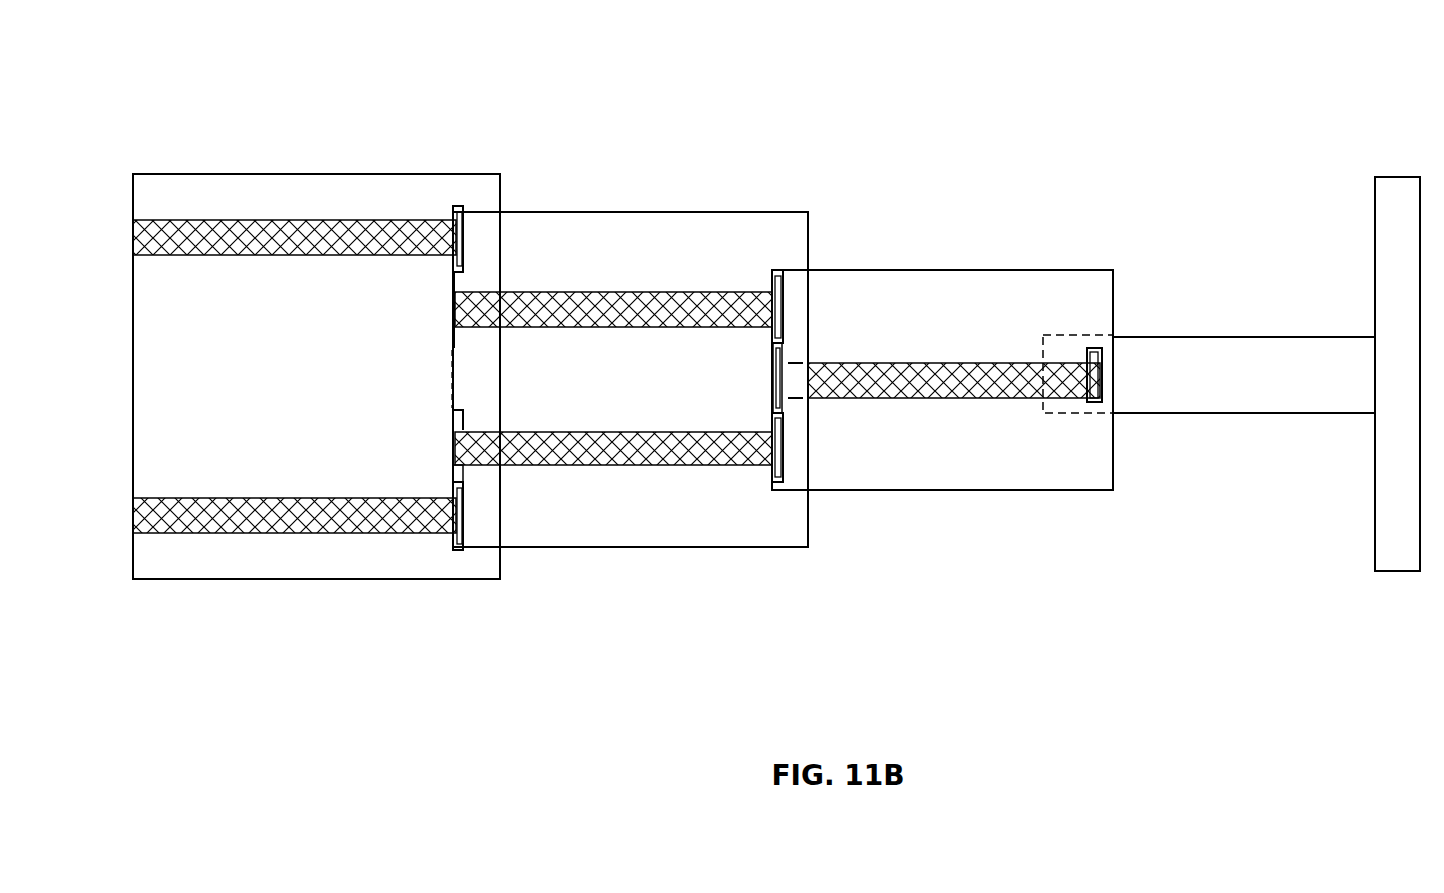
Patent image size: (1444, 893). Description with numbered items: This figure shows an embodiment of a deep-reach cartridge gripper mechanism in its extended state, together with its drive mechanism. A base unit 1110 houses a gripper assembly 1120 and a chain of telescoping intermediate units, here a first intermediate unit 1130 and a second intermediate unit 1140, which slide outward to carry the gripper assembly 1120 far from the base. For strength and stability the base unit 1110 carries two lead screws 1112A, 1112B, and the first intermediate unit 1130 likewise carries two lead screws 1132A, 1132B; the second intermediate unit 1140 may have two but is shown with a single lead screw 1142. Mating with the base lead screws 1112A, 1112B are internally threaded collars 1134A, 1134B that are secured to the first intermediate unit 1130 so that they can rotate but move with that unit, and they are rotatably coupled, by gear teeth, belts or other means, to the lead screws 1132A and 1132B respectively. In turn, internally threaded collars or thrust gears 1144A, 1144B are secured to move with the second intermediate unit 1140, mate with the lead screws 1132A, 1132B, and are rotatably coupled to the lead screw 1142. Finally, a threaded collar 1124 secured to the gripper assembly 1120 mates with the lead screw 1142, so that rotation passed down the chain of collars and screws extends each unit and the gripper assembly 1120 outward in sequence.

The base unit 1110 is at (227, 173).
The lead screw 1112A is at (302, 227).
The lead screw 1112B is at (277, 515).
The first intermediate unit 1130 is at (638, 217).
The lead screw 1132A is at (678, 293).
The lead screw 1132B is at (623, 465).
The internally threaded collar 1134A is at (468, 222).
The internally threaded collar 1134B is at (447, 535).
The second intermediate unit 1140 is at (1037, 272).
The lead screw 1142 is at (885, 378).
The internally threaded collar or thrust gear 1144A is at (785, 300).
The internally threaded collar or thrust gear 1144B is at (783, 463).
The gripper assembly 1120 is at (1293, 337).
The threaded collar 1124 is at (1102, 378).